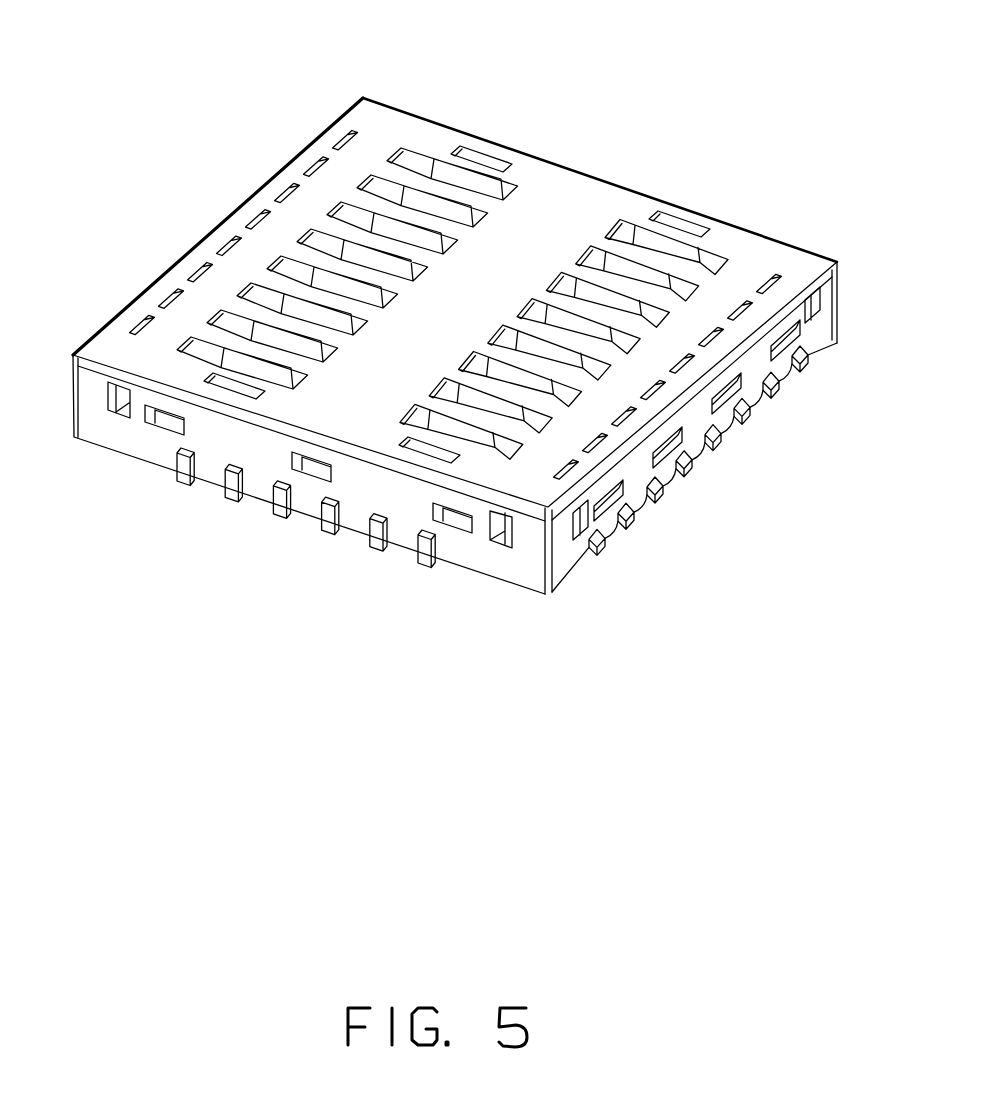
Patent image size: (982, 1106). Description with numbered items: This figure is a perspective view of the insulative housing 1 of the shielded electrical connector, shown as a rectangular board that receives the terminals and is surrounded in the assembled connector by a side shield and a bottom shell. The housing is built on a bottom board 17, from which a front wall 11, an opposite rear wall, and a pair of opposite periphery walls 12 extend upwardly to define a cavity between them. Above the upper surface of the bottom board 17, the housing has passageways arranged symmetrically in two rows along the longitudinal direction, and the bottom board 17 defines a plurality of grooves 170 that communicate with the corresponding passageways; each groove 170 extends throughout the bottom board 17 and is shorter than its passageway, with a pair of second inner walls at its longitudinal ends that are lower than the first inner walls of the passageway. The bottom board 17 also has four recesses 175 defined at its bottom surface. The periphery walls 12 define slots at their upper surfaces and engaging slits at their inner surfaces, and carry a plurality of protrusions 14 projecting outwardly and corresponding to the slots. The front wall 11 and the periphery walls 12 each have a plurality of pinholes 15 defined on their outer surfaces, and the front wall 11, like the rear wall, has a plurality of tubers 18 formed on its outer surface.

The insulative housing 1 is at (213, 158).
The front wall 11 is at (137, 443).
The periphery wall 12 is at (395, 125).
The protrusion 14 is at (695, 468).
The pinhole 15 is at (503, 547).
The bottom board 17 is at (555, 192).
The tuber 18 is at (280, 503).
The groove 170 is at (667, 250).
The recess 175 is at (480, 157).